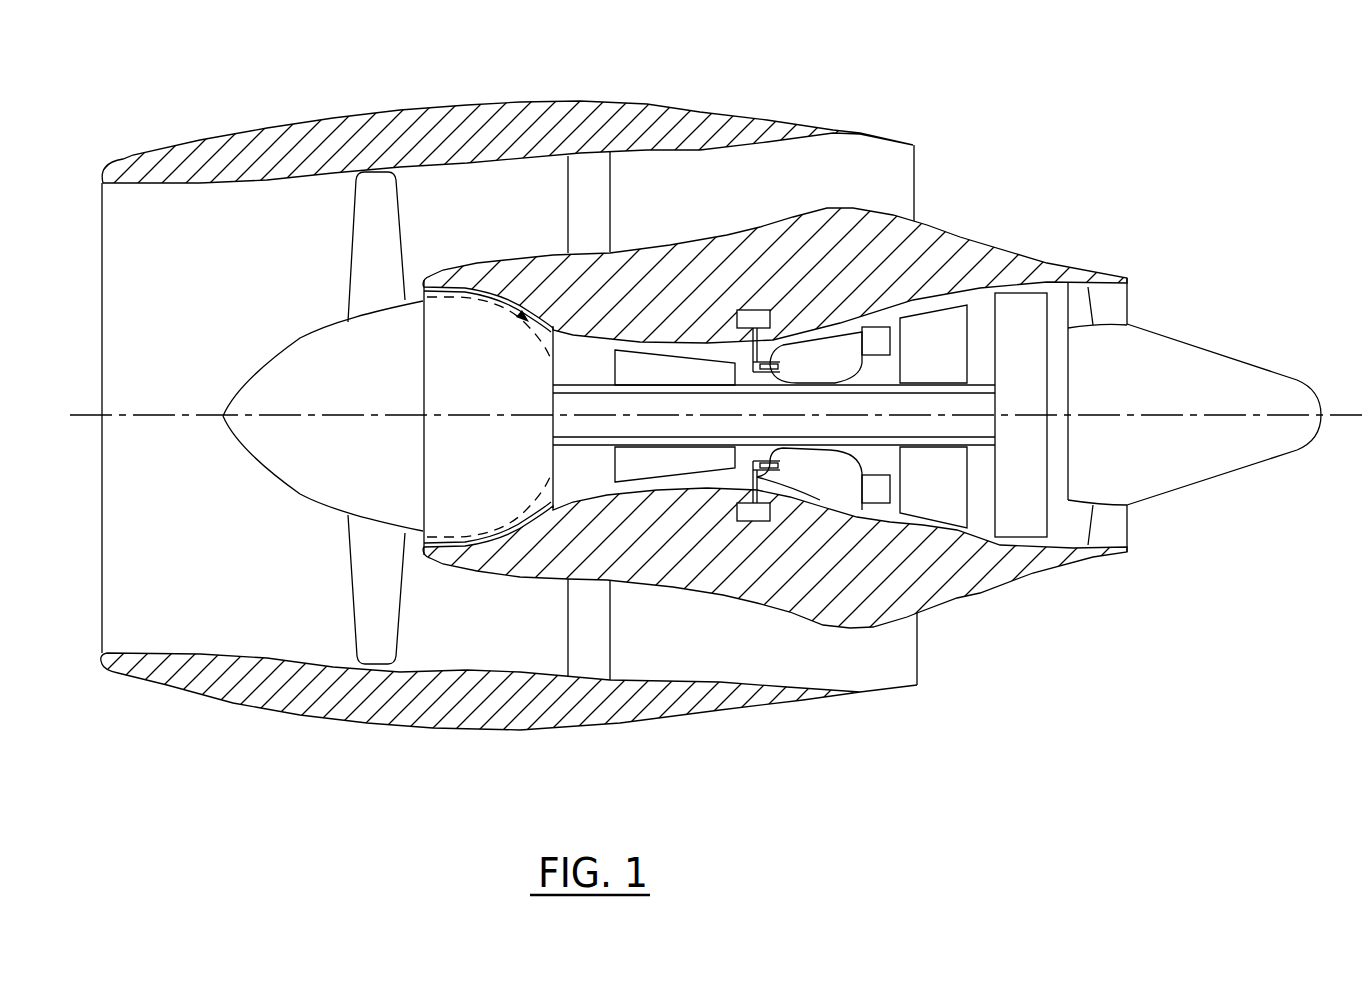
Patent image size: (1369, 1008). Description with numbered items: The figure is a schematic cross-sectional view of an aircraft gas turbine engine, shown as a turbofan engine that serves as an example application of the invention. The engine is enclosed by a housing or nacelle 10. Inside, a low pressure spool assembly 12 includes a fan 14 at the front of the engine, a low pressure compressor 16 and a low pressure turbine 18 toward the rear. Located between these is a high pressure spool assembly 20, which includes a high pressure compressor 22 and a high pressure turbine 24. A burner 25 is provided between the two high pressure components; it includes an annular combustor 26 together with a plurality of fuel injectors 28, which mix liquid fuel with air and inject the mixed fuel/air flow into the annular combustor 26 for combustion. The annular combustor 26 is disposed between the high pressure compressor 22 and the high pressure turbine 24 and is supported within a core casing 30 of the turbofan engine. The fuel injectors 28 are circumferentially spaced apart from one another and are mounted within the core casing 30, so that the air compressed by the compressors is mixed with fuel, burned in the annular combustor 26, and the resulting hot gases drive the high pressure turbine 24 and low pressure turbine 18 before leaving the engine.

The nacelle 10 is at (650, 105).
The low pressure spool assembly 12 is at (980, 390).
The fan 14 is at (353, 237).
The low pressure compressor 16 is at (465, 323).
The low pressure turbine 18 is at (1047, 303).
The high pressure spool assembly 20 is at (713, 350).
The high pressure compressor 22 is at (628, 367).
The high pressure turbine 24 is at (935, 307).
The burner 25 is at (823, 357).
The annular combustor 26 is at (842, 480).
The fuel injectors 28 is at (757, 477).
The core casing 30 is at (791, 218).